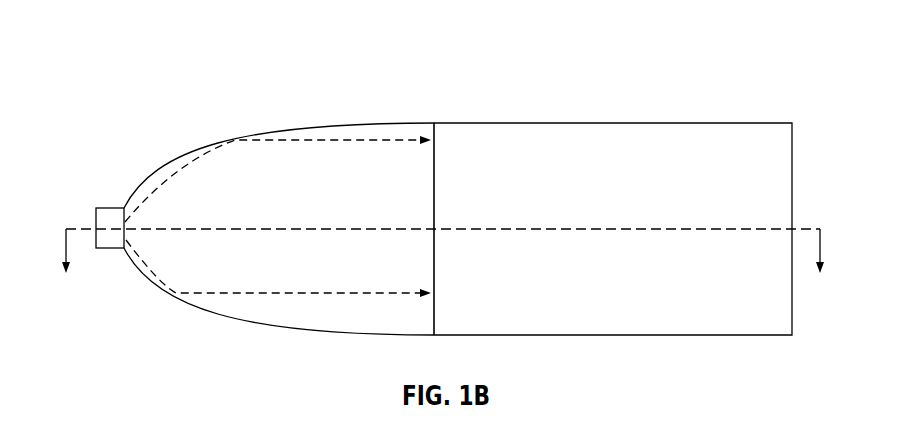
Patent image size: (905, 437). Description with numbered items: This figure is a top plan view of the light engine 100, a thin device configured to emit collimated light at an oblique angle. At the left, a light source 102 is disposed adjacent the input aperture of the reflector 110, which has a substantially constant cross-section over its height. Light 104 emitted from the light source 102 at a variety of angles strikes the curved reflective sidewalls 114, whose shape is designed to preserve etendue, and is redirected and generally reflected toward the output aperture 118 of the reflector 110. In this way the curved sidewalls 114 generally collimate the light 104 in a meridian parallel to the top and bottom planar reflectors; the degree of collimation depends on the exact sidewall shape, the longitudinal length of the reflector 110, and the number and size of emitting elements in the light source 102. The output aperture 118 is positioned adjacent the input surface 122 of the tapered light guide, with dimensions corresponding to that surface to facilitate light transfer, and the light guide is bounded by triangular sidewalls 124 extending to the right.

The light engine 100 is at (178, 67).
The light source 102 is at (110, 212).
The light 104 is at (378, 140).
The reflector 110 is at (234, 180).
The reflective sidewalls 114 is at (295, 126).
The output aperture 118 is at (432, 178).
The input surface 122 is at (437, 208).
The triangular sidewalls 124 is at (620, 122).